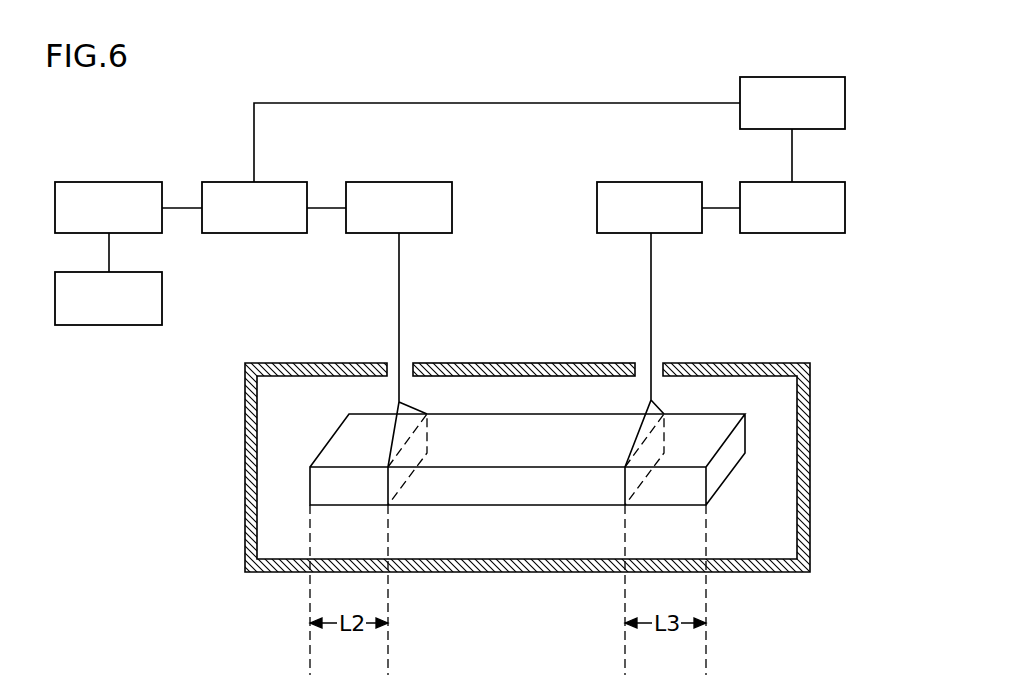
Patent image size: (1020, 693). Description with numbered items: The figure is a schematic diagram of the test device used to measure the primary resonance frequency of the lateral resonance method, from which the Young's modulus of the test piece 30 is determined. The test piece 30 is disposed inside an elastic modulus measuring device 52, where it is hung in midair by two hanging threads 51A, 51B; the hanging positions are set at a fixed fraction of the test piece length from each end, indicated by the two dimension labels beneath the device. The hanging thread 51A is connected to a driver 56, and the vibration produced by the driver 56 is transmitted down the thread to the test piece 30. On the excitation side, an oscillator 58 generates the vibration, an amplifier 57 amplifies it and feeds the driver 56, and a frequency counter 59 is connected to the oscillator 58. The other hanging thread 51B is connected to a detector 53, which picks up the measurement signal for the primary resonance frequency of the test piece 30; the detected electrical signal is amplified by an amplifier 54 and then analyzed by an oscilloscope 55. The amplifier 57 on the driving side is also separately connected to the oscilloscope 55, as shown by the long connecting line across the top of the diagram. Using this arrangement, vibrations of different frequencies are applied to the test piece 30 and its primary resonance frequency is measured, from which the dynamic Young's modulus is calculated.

The test piece 30 is at (340, 447).
The hanging thread 51A is at (398, 323).
The hanging thread 51B is at (648, 323).
The elastic modulus measuring device 52 is at (245, 437).
The detector 53 is at (620, 203).
The amplifier 54 is at (795, 205).
The oscilloscope 55 is at (788, 95).
The driver 56 is at (393, 203).
The amplifier 57 is at (263, 200).
The oscillator 58 is at (100, 205).
The frequency counter 59 is at (138, 303).